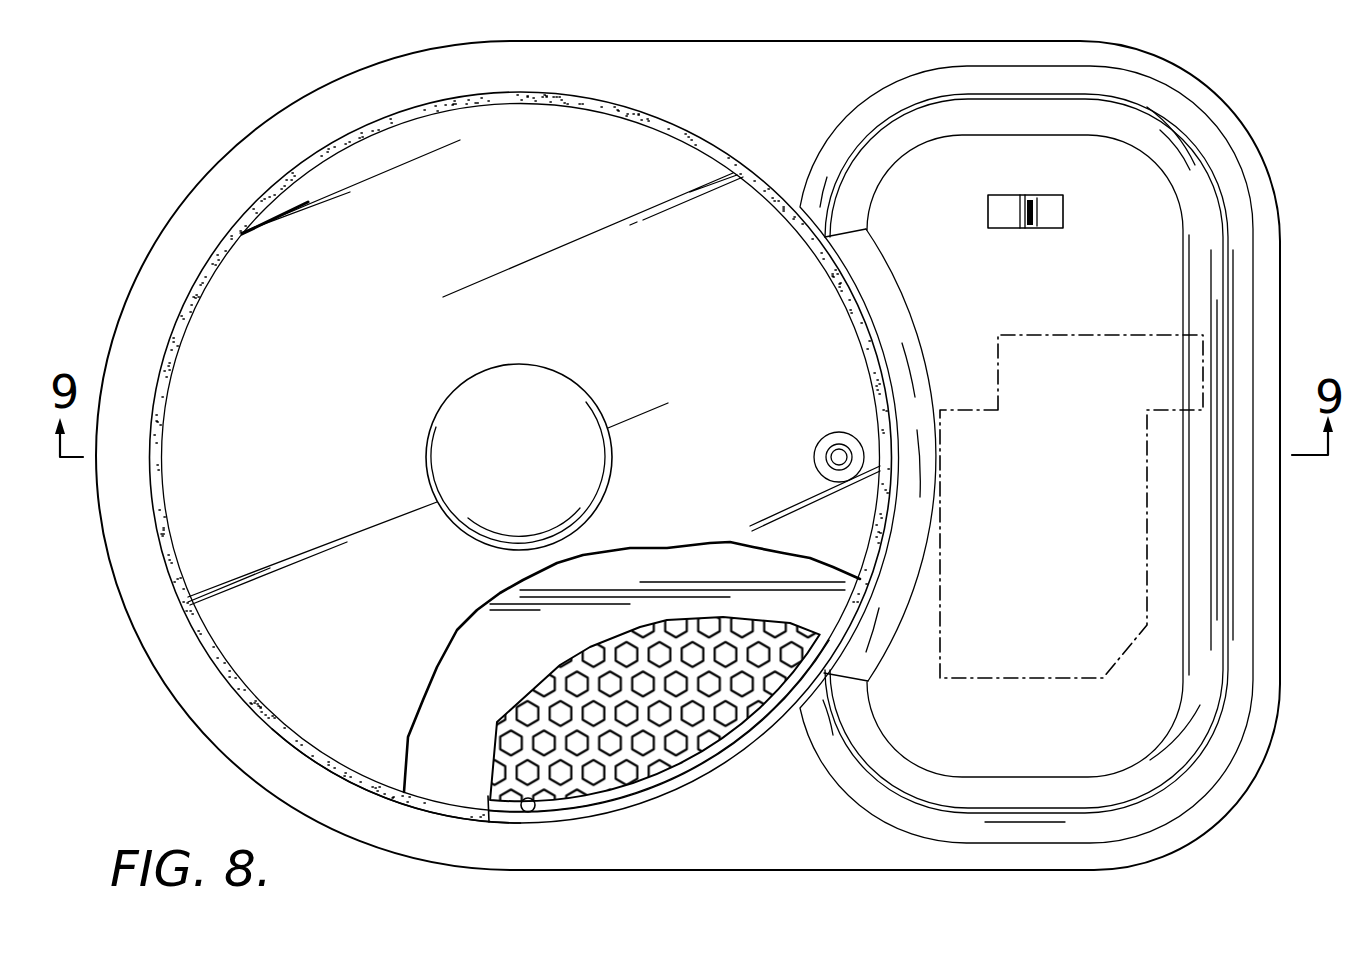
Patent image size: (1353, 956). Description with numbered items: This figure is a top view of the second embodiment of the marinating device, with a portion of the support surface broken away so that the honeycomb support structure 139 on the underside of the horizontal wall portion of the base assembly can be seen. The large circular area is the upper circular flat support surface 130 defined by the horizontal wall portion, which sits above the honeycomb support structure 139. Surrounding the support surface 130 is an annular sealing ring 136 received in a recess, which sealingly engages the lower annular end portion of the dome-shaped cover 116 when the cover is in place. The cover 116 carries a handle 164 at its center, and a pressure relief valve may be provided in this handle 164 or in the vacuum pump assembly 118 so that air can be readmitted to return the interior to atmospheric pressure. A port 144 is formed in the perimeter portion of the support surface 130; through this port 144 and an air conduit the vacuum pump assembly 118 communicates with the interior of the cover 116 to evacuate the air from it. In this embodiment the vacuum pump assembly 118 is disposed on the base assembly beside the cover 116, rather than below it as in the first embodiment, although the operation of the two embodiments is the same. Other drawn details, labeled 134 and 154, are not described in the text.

The cover 116 is at (697, 141).
The annular sealing ring 136 is at (280, 737).
The handle 164 is at (572, 381).
The port 144 is at (833, 433).
The upper circular flat support surface 130 is at (523, 657).
The honeycomb support structure 139 is at (683, 722).
The arm edge member 134 is at (753, 737).
The connector 154 is at (1050, 205).
The vacuum pump assembly 118 is at (1093, 333).